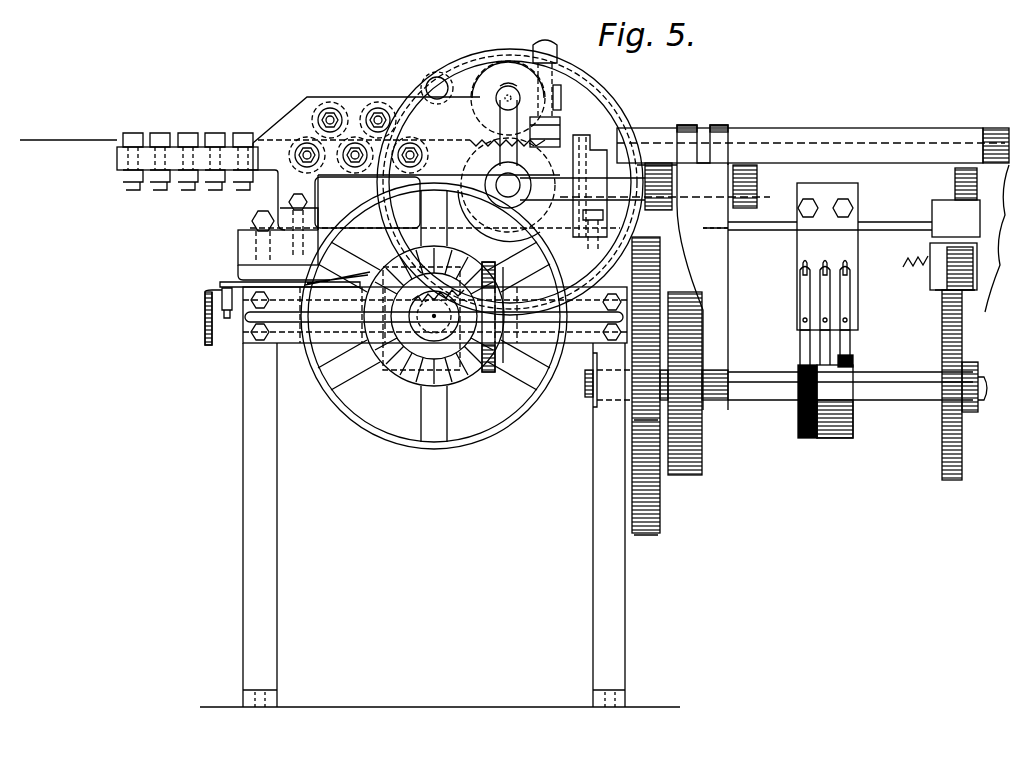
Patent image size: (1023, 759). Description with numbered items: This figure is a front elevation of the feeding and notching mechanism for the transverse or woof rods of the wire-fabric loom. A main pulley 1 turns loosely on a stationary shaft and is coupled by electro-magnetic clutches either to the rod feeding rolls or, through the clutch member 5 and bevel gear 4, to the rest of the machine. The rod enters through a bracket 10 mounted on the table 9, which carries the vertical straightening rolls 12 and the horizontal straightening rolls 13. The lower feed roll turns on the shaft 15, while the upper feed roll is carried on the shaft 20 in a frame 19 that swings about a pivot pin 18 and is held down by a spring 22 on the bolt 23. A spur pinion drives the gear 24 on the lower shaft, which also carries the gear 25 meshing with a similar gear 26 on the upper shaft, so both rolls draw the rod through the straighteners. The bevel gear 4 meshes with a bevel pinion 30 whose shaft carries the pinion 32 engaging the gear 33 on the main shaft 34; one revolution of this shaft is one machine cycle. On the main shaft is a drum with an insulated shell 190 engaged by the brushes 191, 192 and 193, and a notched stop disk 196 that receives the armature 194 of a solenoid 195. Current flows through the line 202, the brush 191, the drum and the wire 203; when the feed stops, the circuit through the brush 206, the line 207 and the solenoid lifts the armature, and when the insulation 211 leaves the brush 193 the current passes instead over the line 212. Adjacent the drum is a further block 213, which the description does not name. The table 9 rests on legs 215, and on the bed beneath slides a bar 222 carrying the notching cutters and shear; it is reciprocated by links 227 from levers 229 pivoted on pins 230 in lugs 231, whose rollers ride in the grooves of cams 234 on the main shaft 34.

The main pulley 1 is at (514, 420).
The bevel gear 4 is at (427, 360).
The clutch member 5 is at (396, 370).
The table 9 is at (284, 237).
The bracket 10 is at (435, 163).
The vertical straightening rolls 12 is at (197, 143).
The horizontal straightening rolls 13 is at (362, 102).
The shaft 15 is at (505, 180).
The pivot pin 18 is at (431, 80).
The frame 19 is at (560, 108).
The shaft 20 is at (498, 98).
The spring 22 is at (575, 68).
The bolt 23 is at (552, 73).
The gear 24 is at (594, 104).
The gear 25 is at (537, 170).
The gear 26 is at (531, 122).
The bevel pinion 30 is at (486, 360).
The pinion 32 is at (657, 302).
The gear 33 is at (647, 536).
The main shaft 34 is at (915, 383).
The insulated shell 190 is at (840, 428).
The brush 191 is at (807, 310).
The brush 192 is at (828, 313).
The brush 193 is at (848, 332).
The armature 194 is at (947, 290).
The solenoid 195 is at (942, 268).
The stop disk 196 is at (945, 332).
The line 202 is at (803, 265).
The wire 203 is at (823, 267).
The brush 206 is at (362, 288).
The line 207 is at (213, 331).
The insulation 211 is at (856, 362).
The line 212 is at (848, 270).
The block 213 is at (798, 427).
The legs 215 is at (604, 398).
The bar 222 is at (813, 220).
The links 227 is at (702, 140).
The levers 229 is at (722, 287).
The pins 230 is at (758, 187).
The lugs 231 is at (672, 193).
The cams 234 is at (686, 476).